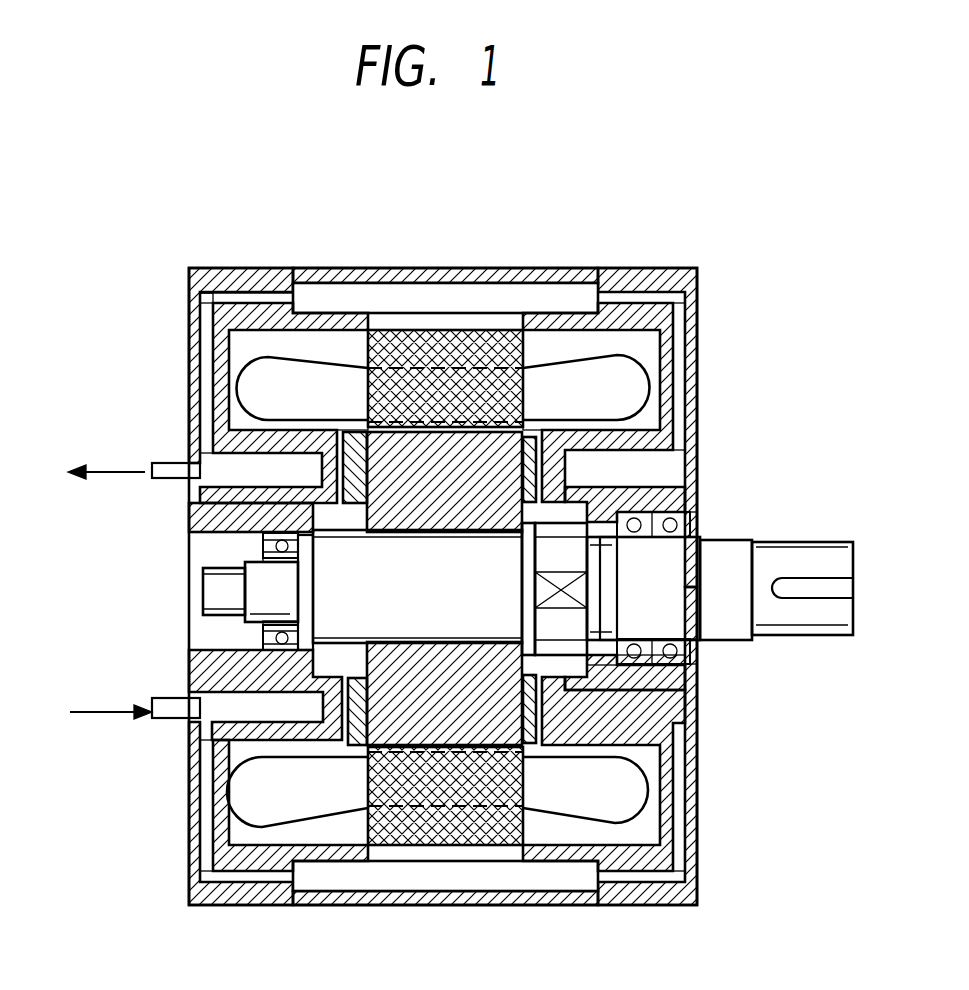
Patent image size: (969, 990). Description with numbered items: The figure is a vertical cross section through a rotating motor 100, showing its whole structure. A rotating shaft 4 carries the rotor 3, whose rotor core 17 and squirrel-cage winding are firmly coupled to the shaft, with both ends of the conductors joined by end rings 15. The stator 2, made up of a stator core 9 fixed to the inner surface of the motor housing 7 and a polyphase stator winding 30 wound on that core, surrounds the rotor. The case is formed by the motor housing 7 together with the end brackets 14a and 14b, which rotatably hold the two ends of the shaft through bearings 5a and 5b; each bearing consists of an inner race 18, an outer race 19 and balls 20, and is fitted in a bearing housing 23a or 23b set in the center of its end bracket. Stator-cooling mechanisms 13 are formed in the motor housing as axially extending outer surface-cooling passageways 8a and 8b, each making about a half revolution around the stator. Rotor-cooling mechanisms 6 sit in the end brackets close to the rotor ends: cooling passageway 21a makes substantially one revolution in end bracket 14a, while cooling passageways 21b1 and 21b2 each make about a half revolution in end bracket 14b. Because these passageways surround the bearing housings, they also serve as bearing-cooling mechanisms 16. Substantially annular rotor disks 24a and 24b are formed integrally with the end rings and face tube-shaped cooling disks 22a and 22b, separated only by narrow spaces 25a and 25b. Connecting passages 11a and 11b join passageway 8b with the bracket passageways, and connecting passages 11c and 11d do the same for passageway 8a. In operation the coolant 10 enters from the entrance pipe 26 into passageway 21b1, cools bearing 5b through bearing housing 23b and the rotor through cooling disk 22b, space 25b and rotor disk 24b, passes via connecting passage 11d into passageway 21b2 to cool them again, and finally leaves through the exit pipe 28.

The rotating motor 100 is at (725, 266).
The stator 2 is at (532, 350).
The rotor 3 is at (445, 491).
The rotating shaft 4 is at (825, 640).
The bearing 5a is at (645, 538).
The bearing 5b is at (300, 560).
The rotor-cooling mechanism 6 is at (343, 511).
The motor housing 7 is at (487, 345).
The outer surface-cooling passageway 8a is at (425, 300).
The outer surface-cooling passageway 8b is at (420, 875).
The stator core 9 is at (495, 330).
The coolant 10 is at (112, 470).
The connecting passage 11a is at (193, 835).
The connecting passage 11b is at (680, 866).
The connecting passage 11c is at (692, 280).
The connecting passage 11d is at (204, 278).
The stator-cooling mechanism 13 is at (350, 266).
The end bracket 14a is at (697, 335).
The end bracket 14b is at (197, 312).
The end ring 15 is at (263, 536).
The bearing-cooling mechanism 16 is at (245, 600).
The rotor core 17 is at (490, 722).
The inner race 18 is at (693, 656).
The outer race 19 is at (693, 682).
The balls 20 is at (698, 556).
The cooling passageway 21a is at (697, 420).
The cooling passageway 21b1 is at (258, 738).
The cooling passageway 21b2 is at (205, 510).
The cooling disk 22a is at (697, 372).
The cooling disk 22b is at (237, 393).
The bearing housing 23a is at (700, 498).
The bearing housing 23b is at (189, 541).
The rotor disk 24a is at (543, 486).
The rotor disk 24b is at (340, 487).
The narrow space 25a is at (528, 568).
The narrow space 25b is at (343, 748).
The entrance pipe 26 is at (162, 726).
The exit pipe 28 is at (165, 462).
The stator winding 30 is at (272, 288).